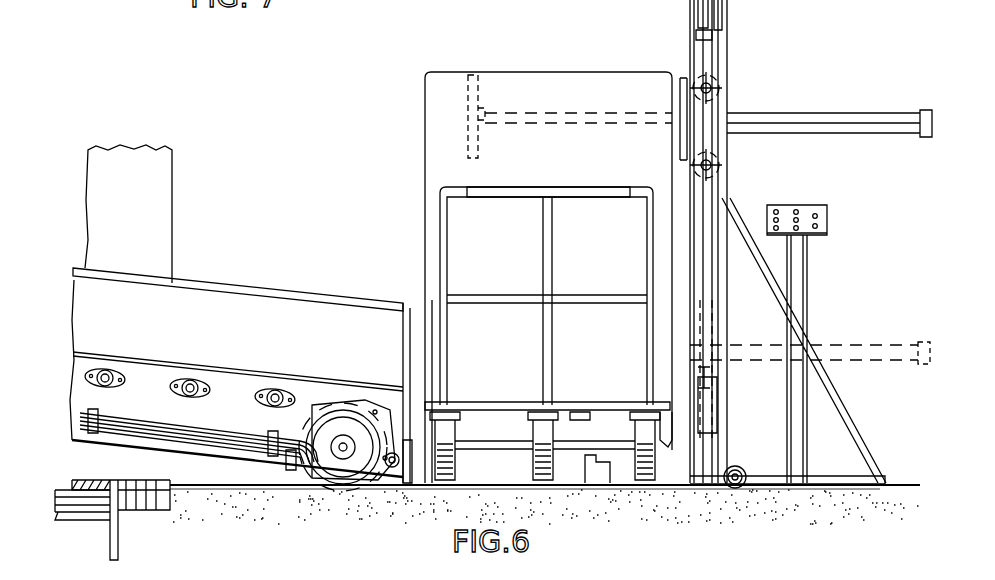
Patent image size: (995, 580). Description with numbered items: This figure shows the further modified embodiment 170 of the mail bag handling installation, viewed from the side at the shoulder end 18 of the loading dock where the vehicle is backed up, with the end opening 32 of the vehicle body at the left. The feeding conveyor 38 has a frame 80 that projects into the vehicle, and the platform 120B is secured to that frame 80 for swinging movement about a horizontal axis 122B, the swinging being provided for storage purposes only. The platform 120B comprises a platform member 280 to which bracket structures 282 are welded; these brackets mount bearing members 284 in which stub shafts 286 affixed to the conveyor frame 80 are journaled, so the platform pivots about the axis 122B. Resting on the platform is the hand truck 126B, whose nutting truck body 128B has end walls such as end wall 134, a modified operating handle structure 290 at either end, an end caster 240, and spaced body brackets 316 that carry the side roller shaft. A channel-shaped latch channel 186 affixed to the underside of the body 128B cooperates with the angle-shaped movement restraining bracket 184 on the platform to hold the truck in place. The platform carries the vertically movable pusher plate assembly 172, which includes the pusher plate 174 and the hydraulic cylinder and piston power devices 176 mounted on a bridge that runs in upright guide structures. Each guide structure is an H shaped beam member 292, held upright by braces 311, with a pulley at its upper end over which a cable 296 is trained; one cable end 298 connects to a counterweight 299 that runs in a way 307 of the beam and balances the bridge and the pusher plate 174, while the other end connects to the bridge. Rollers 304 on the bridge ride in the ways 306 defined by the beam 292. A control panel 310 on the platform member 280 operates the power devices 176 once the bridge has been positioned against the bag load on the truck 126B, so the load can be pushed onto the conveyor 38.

The shoulder end 18 is at (210, 540).
The end opening 32 is at (172, 183).
The feeding conveyor 38 is at (212, 268).
The frame 80 is at (256, 322).
The platform 120B is at (627, 492).
The horizontal axis 122B is at (395, 470).
The hand truck 126B is at (581, 57).
The nutting truck body 128B is at (488, 398).
The end wall 134 is at (524, 90).
The embodiment 170 is at (396, 112).
The pusher plate assembly 172 is at (762, 70).
The pusher plate 174 is at (468, 92).
The hydraulic cylinder and piston power devices 176 is at (838, 116).
The movement restraining bracket 184 is at (602, 472).
The latch channel 186 is at (590, 425).
The end caster 240 is at (565, 392).
The platform member 280 is at (735, 490).
The bracket structure 282 is at (410, 487).
The bearing member 284 is at (397, 440).
The stub shaft 286 is at (376, 450).
The operating handle structure 290 is at (556, 186).
The H shaped beam member 292 is at (727, 192).
The cable 296 is at (706, 50).
The cable end 298 is at (706, 375).
The counterweight 299 is at (718, 410).
The roller 304 is at (722, 90).
The way 306 is at (608, 112).
The way 307 is at (702, 15).
The control panel 310 is at (828, 225).
The brace 311 is at (843, 358).
The body bracket 316 is at (440, 420).